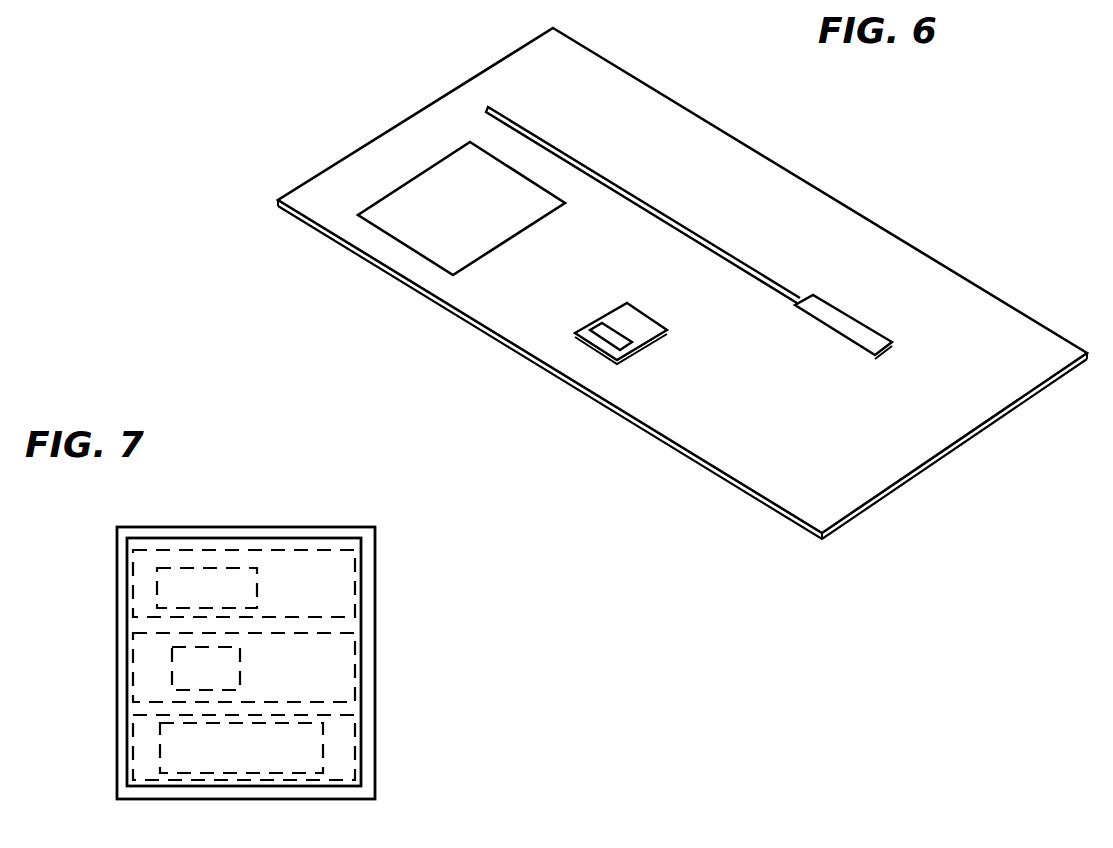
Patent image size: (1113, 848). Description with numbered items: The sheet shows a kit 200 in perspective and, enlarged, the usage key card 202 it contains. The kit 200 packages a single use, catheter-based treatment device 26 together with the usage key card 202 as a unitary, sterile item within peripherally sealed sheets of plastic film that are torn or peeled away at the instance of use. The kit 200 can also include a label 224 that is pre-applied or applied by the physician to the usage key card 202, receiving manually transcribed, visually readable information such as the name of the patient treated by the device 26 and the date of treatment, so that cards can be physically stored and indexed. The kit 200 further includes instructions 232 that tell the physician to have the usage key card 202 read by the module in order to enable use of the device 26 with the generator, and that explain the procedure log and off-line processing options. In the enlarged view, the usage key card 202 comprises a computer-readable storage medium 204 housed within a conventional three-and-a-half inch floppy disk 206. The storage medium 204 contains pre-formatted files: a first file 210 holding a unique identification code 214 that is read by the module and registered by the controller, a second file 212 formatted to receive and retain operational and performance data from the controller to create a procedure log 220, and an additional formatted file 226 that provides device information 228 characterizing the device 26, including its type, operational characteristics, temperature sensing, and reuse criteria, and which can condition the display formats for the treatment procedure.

In FIG. 6, the kit 200 is at (757, 168).
In FIG. 6, the catheter-based treatment device 26 is at (775, 277).
In FIG. 6, the instructions 232 is at (432, 239).
In FIG. 6, the usage key card 202 is at (645, 322).
In FIG. 7, the usage key card 202 is at (258, 623).
In FIG. 6, the label 224 is at (632, 355).
In FIG. 7, the storage medium 204 is at (145, 628).
In FIG. 7, the floppy disk 206 is at (368, 775).
In FIG. 7, the first file 210 is at (343, 572).
In FIG. 7, the second file 212 is at (338, 648).
In FIG. 7, the unique identification code 214 is at (255, 572).
In FIG. 7, the procedure log 220 is at (173, 649).
In FIG. 7, the additional formatted file 226 is at (343, 727).
In FIG. 7, the device information 228 is at (162, 727).